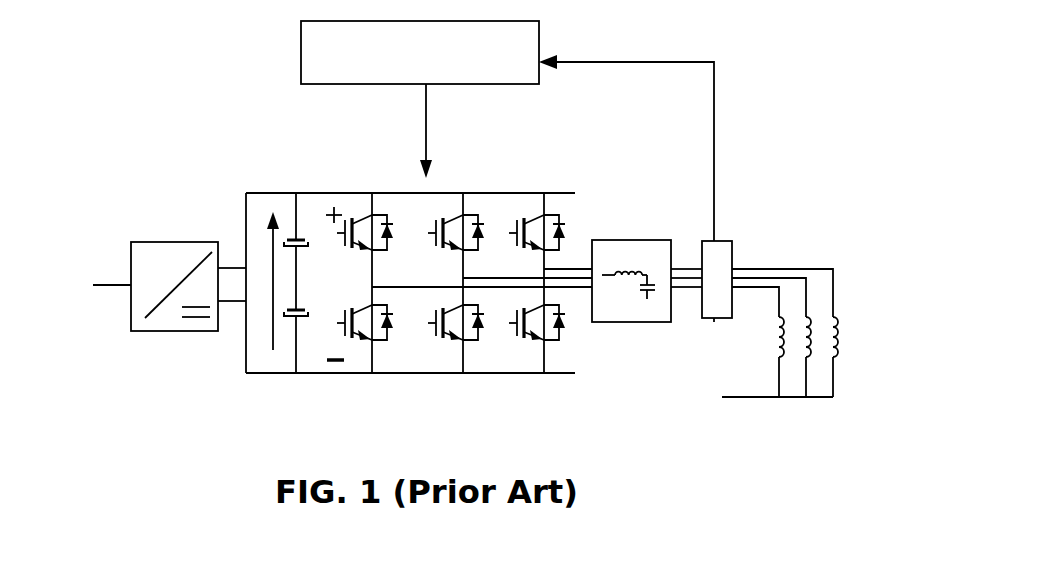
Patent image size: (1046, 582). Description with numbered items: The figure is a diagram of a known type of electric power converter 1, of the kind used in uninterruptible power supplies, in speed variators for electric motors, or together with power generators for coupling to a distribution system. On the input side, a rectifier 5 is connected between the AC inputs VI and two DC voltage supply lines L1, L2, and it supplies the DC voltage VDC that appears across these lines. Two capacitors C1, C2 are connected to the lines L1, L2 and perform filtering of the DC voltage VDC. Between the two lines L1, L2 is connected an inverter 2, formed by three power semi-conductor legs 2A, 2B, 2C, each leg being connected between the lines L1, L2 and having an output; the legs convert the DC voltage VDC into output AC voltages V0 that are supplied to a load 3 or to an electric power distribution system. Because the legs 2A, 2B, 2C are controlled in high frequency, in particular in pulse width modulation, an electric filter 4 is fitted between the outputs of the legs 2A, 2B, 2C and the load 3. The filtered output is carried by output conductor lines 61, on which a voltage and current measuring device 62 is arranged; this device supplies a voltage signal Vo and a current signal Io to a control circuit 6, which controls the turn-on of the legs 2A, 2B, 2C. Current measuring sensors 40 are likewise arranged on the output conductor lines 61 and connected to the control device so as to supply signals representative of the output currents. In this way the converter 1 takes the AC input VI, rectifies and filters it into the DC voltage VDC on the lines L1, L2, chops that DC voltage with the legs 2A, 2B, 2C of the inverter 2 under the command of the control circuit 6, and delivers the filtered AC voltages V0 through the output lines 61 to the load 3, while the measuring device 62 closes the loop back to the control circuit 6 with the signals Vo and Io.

The converter 1 is at (367, 273).
The inverter 2 is at (464, 236).
The power semi-conductor leg 2A is at (405, 236).
The power semi-conductor leg 2B is at (493, 234).
The power semi-conductor leg 2C is at (573, 234).
The load 3 is at (791, 358).
The electric filter 4 is at (637, 240).
The rectifier 5 is at (160, 242).
The control circuit 6 is at (301, 39).
The current measuring sensor 40 is at (714, 320).
The output lines 61 is at (795, 261).
The voltage and current measuring device 62 is at (720, 241).
The DC voltage line L1 is at (257, 192).
The DC voltage line L2 is at (258, 375).
The capacitor C1 is at (307, 223).
The capacitor C2 is at (312, 324).
The AC inputs VI is at (102, 279).
The DC voltage VDC is at (253, 281).
The output AC voltages V0 is at (574, 298).
The voltage signal Vo is at (654, 60).
The current signal Io is at (697, 60).